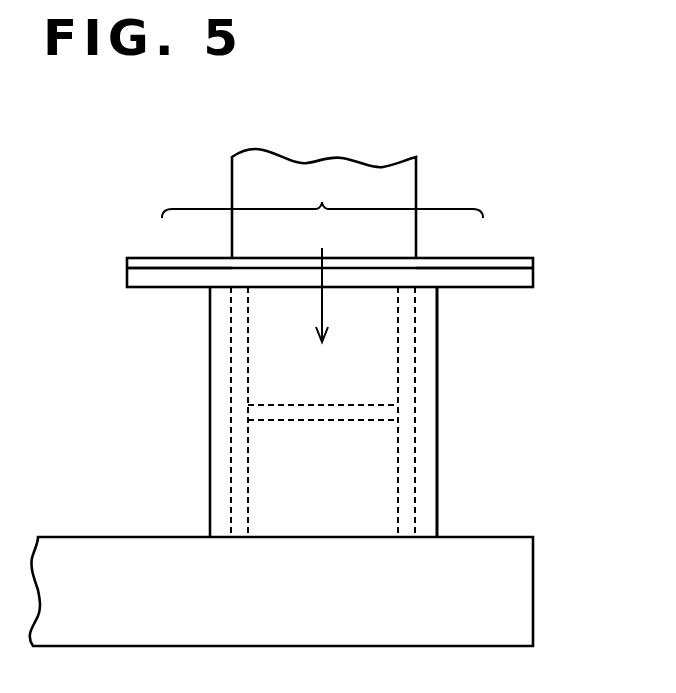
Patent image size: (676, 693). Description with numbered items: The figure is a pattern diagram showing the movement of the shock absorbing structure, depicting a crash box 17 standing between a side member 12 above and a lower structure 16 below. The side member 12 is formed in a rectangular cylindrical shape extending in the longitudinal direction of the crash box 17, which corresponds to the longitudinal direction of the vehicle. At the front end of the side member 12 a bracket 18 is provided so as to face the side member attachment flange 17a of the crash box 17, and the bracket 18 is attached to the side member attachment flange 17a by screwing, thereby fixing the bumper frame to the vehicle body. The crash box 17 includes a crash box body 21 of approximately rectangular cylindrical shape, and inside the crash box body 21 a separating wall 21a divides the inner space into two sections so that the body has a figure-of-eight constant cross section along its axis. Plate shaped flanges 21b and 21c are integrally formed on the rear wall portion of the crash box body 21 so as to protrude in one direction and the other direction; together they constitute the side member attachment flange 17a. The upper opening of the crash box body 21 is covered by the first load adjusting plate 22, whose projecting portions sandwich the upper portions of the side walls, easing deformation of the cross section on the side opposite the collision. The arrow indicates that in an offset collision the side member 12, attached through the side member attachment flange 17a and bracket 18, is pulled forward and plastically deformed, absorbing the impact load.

The side member 12 is at (410, 173).
The base / stage 16 is at (522, 587).
The crash box 17 is at (210, 382).
The side member attachment flange 17a is at (322, 258).
The bracket 18 is at (532, 263).
The crash box body 21 is at (415, 445).
The separating wall 21a is at (292, 423).
The flange 21b is at (185, 277).
The flange 21c is at (470, 277).
The first load adjusting plate 22 is at (437, 388).